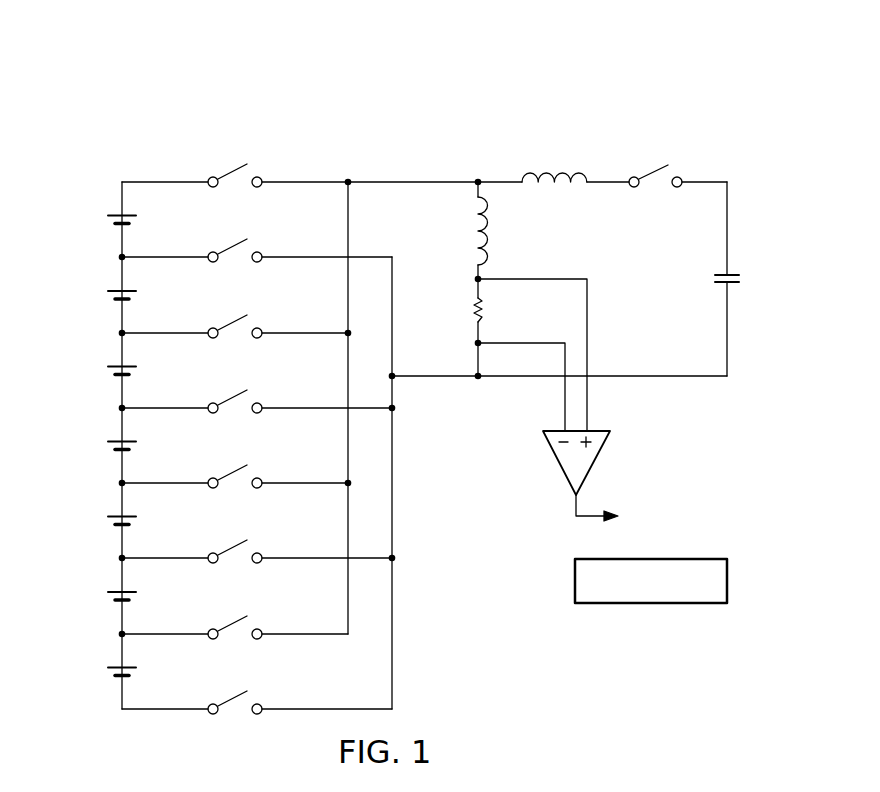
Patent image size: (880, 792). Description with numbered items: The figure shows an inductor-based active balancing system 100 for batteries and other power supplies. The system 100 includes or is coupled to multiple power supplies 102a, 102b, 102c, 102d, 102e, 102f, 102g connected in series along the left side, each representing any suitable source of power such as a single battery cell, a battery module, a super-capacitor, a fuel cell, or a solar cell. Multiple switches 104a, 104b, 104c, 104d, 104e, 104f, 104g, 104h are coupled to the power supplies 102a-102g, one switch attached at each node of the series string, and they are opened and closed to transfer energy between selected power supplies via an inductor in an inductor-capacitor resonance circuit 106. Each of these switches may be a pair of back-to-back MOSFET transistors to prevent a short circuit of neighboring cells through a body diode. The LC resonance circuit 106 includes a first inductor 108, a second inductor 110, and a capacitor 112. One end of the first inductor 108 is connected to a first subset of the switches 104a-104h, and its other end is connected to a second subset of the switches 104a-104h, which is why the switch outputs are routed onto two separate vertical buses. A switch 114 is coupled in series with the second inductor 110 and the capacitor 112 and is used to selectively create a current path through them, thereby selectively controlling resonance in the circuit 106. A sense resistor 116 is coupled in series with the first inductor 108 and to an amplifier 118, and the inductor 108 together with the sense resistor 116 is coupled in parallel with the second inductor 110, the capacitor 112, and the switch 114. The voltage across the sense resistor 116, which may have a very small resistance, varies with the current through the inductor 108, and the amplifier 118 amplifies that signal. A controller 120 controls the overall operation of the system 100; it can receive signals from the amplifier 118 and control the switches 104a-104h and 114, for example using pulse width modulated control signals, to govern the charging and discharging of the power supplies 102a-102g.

The inductor-based active balancing system 100 is at (305, 61).
The power supply 102a is at (107, 218).
The power supply 102b is at (107, 293).
The power supply 102c is at (107, 369).
The power supply 102d is at (107, 444).
The power supply 102e is at (107, 519).
The power supply 102f is at (107, 594).
The power supply 102g is at (107, 670).
The switch 104a is at (233, 167).
The switch 104b is at (233, 242).
The switch 104c is at (233, 318).
The switch 104d is at (233, 393).
The switch 104e is at (233, 468).
The switch 104f is at (233, 543).
The switch 104g is at (233, 619).
The switch 104h is at (233, 694).
The LC resonance circuit 106 is at (585, 130).
The first inductor 108 is at (495, 222).
The second inductor 110 is at (548, 165).
The capacitor 112 is at (740, 278).
The switch 114 is at (655, 170).
The sense resistor 116 is at (485, 313).
The amplifier 118 is at (557, 463).
The controller 120 is at (730, 580).